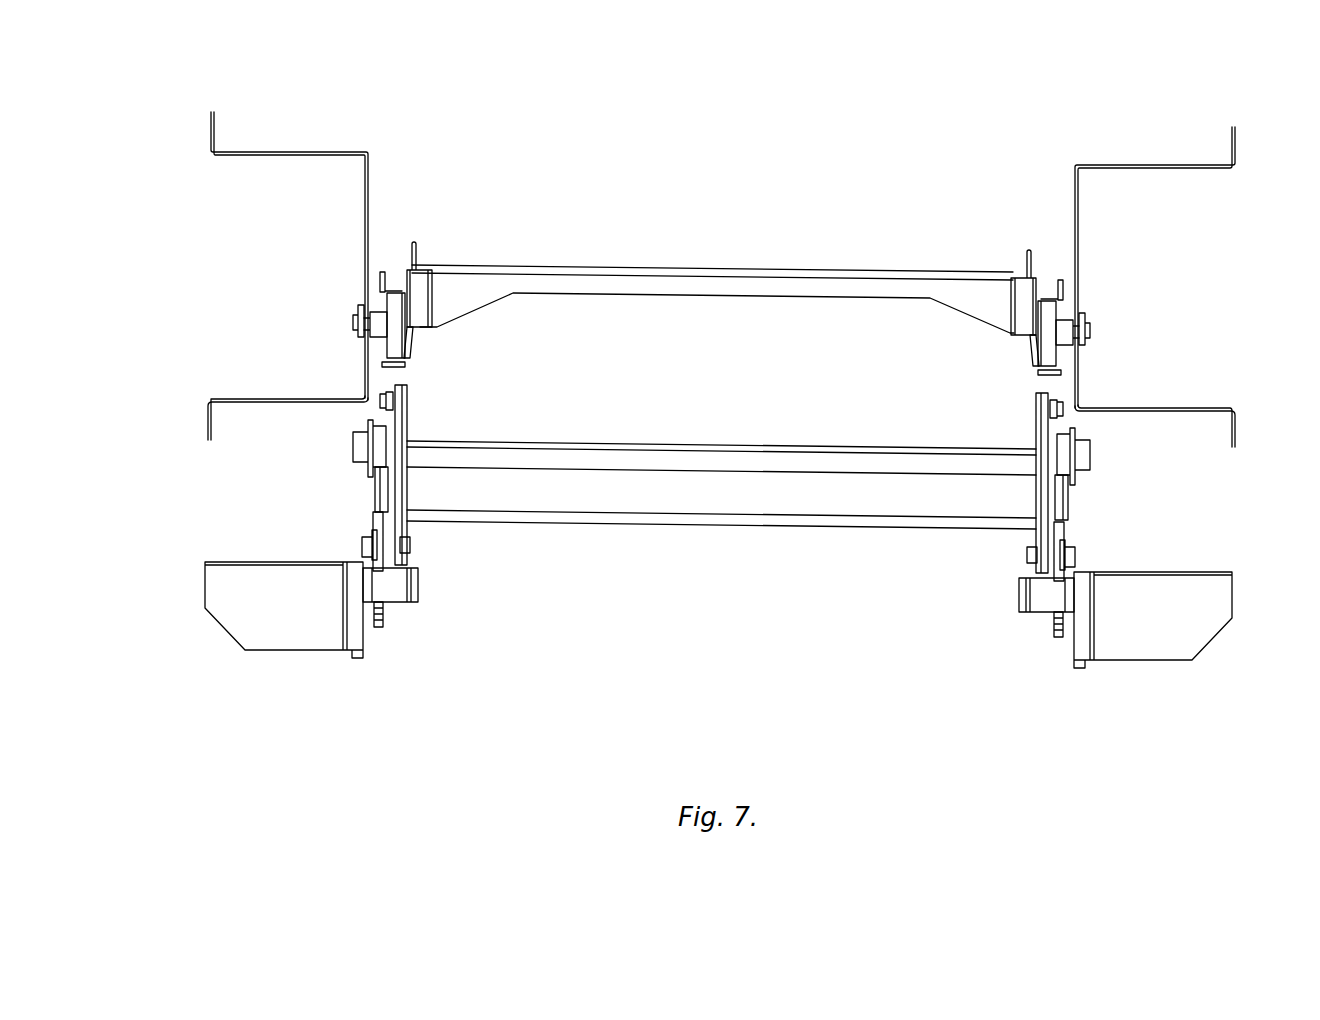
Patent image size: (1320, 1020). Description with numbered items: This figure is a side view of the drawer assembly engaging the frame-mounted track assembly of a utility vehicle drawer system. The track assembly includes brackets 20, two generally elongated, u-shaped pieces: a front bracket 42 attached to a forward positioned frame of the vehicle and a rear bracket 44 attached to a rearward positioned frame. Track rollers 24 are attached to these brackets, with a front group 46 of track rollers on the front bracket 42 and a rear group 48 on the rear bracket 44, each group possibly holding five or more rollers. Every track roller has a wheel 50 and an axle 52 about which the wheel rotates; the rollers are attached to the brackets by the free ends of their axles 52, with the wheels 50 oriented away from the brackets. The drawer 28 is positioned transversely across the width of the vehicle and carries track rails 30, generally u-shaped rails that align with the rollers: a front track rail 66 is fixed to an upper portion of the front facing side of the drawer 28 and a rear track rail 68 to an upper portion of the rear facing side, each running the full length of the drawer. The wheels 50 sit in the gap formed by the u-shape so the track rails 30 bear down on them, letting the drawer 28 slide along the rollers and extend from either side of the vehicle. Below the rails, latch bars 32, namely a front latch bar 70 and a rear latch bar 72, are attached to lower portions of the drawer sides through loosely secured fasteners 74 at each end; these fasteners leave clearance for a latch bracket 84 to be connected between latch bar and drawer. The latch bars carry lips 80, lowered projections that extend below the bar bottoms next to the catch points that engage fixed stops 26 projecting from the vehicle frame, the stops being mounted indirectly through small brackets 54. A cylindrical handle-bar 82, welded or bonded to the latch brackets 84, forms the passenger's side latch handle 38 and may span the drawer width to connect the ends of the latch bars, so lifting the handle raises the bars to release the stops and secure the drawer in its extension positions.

The brackets 20 is at (363, 230).
The track rollers 24 is at (388, 302).
The fixed stops 26 is at (393, 592).
The drawer 28 is at (714, 312).
The track rails 30 is at (396, 286).
The latch bars 32 is at (382, 525).
The passenger's side latch handle 38 is at (848, 508).
The front bracket 42 is at (1213, 409).
The rear bracket 44 is at (293, 398).
The front group of track rollers 46 is at (1053, 362).
The rear group of track rollers 48 is at (395, 350).
The wheel 50 is at (395, 338).
The axle 52 is at (372, 325).
The small brackets 54 is at (240, 598).
The front track rail 66 is at (1061, 280).
The rear track rail 68 is at (383, 272).
The front latch bar 70 is at (1063, 512).
The rear latch bar 72 is at (375, 505).
The loosely secured fasteners 74 is at (357, 445).
The lips 80 is at (378, 622).
The handle-bar 82 is at (713, 508).
The latch bracket 84 is at (395, 532).